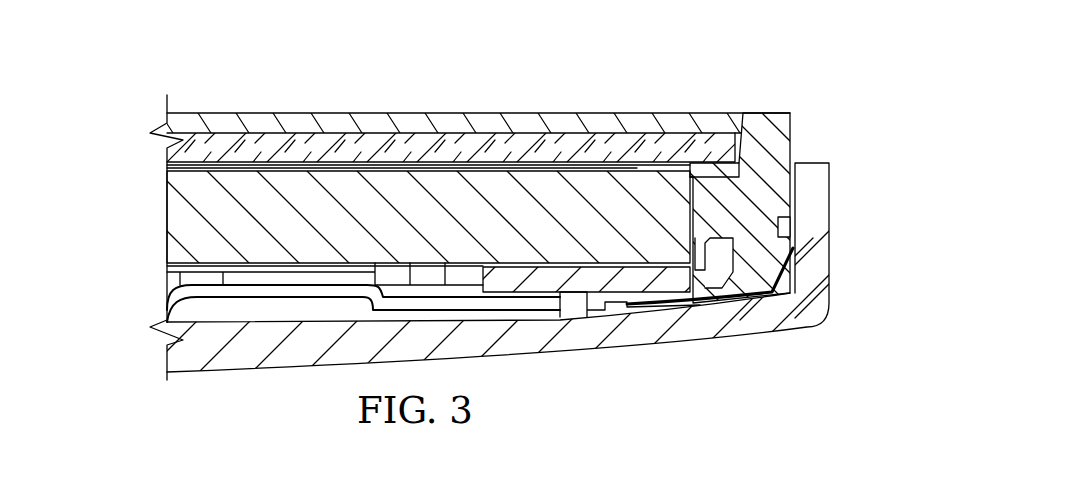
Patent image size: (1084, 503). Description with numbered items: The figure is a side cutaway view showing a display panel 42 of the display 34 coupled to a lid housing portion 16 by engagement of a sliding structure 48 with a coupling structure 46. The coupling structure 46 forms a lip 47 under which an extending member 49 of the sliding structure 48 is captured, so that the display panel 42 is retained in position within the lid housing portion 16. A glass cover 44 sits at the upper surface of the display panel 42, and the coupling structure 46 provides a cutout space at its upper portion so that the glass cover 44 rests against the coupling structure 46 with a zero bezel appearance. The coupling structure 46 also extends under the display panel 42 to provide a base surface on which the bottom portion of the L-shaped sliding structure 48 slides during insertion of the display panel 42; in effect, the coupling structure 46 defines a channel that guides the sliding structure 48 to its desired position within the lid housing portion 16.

The lid housing portion 16 is at (577, 342).
The display 34 is at (525, 209).
The display panel 42 is at (173, 217).
The glass cover 44 is at (433, 106).
The coupling structure 46 is at (780, 145).
The lip 47 is at (723, 240).
The sliding structure 48 is at (663, 277).
The extending member 49 is at (720, 260).